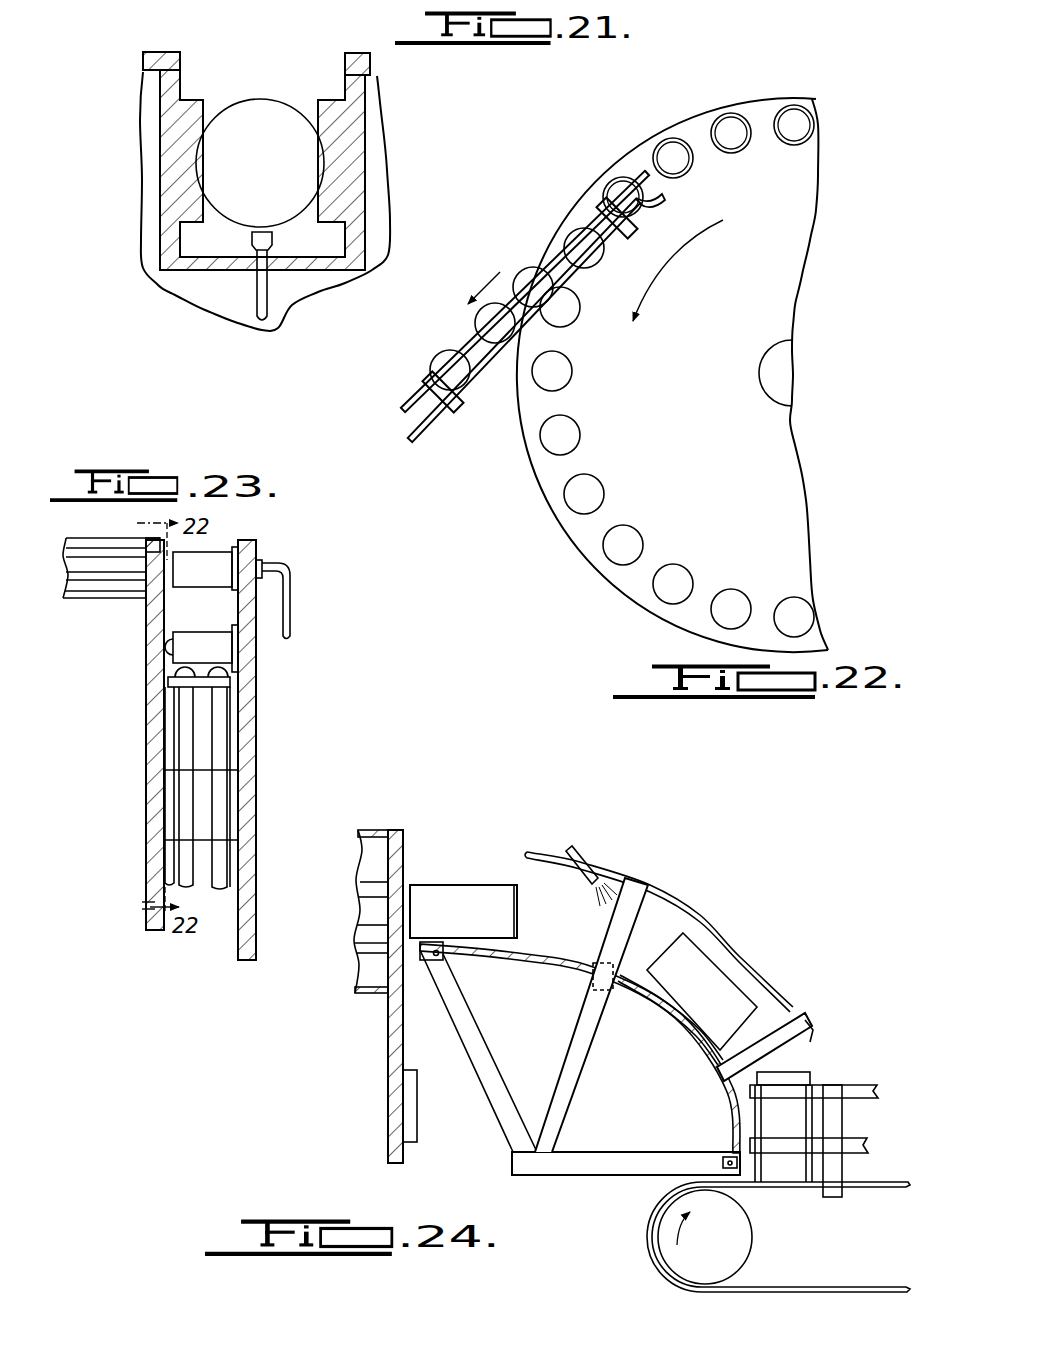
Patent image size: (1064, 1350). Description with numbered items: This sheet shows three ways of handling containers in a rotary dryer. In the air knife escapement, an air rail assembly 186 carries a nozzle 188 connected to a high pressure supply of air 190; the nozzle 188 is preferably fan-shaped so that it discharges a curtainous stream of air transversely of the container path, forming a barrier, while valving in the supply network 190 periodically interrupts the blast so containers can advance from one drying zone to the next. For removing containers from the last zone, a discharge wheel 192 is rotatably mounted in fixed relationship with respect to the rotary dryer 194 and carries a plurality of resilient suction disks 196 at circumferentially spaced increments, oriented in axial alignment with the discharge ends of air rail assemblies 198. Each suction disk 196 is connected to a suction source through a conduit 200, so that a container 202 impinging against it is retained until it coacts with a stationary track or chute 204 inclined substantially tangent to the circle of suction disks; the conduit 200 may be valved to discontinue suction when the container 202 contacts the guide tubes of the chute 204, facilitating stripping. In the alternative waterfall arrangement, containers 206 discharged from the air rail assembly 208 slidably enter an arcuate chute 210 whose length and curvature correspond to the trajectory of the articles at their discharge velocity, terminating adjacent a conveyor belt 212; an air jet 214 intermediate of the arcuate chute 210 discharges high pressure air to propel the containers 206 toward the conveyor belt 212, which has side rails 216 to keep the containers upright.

In FIG. 21, the air rail assembly 186 is at (368, 140).
In FIG. 21, the nozzle 188 is at (272, 240).
In FIG. 21, the high pressure supply of air 190 is at (258, 291).
In FIG. 22, the discharge wheel 192 is at (770, 470).
In FIG. 23, the discharge wheel 192 is at (247, 760).
In FIG. 23, the rotary dryer 194 is at (146, 787).
In FIG. 22, the resilient suction disks 196 is at (727, 112).
In FIG. 23, the resilient suction disks 196 is at (240, 557).
In FIG. 23, the air rail assemblies 198 is at (112, 583).
In FIG. 23, the conduit 200 is at (290, 615).
In FIG. 22, the container 202 is at (790, 130).
In FIG. 23, the container 202 is at (210, 557).
In FIG. 22, the track or chute 204 is at (472, 390).
In FIG. 23, the track or chute 204 is at (187, 832).
In FIG. 24, the containers 206 is at (444, 890).
In FIG. 24, the air rail assembly 208 is at (353, 939).
In FIG. 24, the arcuate chute 210 is at (569, 966).
In FIG. 24, the conveyor belt 212 is at (790, 1185).
In FIG. 24, the air jet 214 is at (585, 863).
In FIG. 24, the side rails 216 is at (867, 1143).